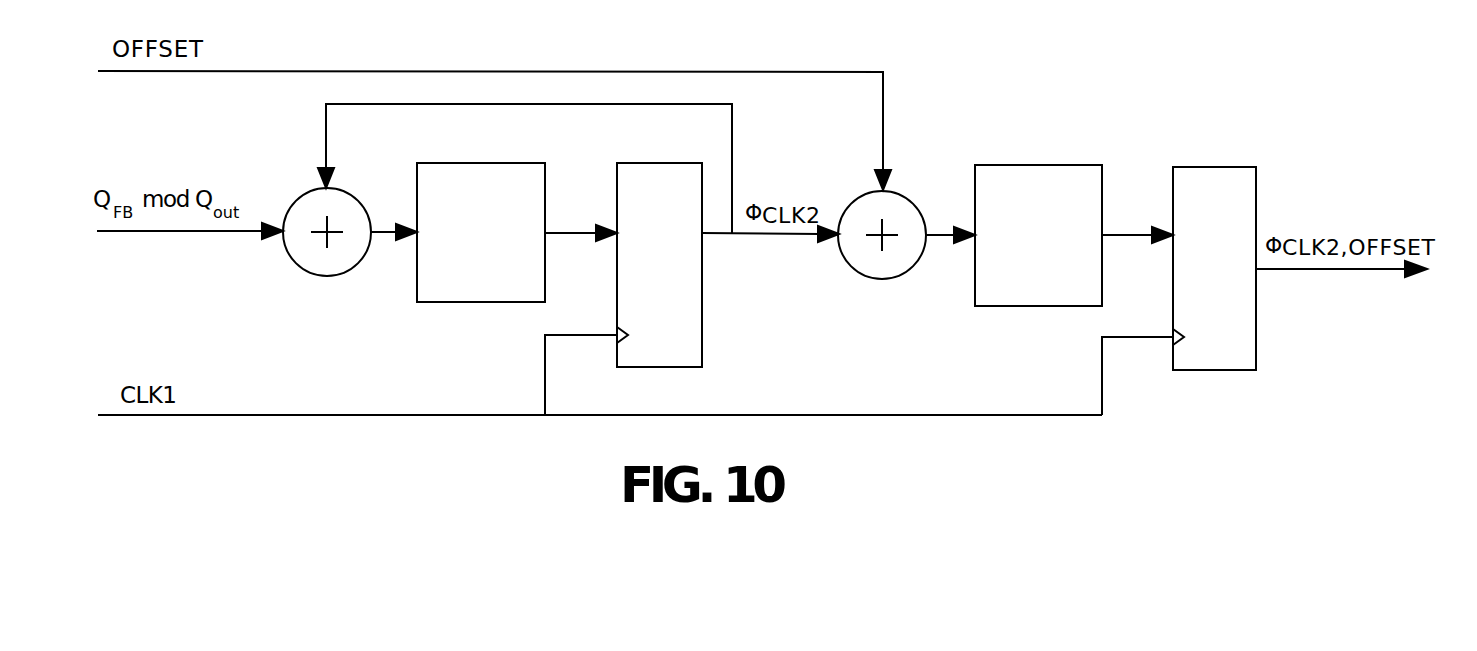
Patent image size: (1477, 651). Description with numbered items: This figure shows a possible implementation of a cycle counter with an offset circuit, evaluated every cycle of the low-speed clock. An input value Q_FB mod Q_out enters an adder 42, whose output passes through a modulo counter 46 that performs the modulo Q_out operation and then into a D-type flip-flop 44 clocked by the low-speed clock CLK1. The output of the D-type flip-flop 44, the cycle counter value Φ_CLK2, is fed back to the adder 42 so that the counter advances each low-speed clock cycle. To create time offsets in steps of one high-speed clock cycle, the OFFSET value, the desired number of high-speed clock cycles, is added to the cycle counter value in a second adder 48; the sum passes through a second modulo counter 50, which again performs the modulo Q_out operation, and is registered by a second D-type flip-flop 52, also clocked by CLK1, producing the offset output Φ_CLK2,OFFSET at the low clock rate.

The adder 42 is at (292, 203).
The D-type flip-flop 44 is at (652, 163).
The modulo counter 46 is at (485, 163).
The second adder 48 is at (848, 206).
The second modulo counter 50 is at (1040, 165).
The second D-type flip-flop 52 is at (1220, 167).